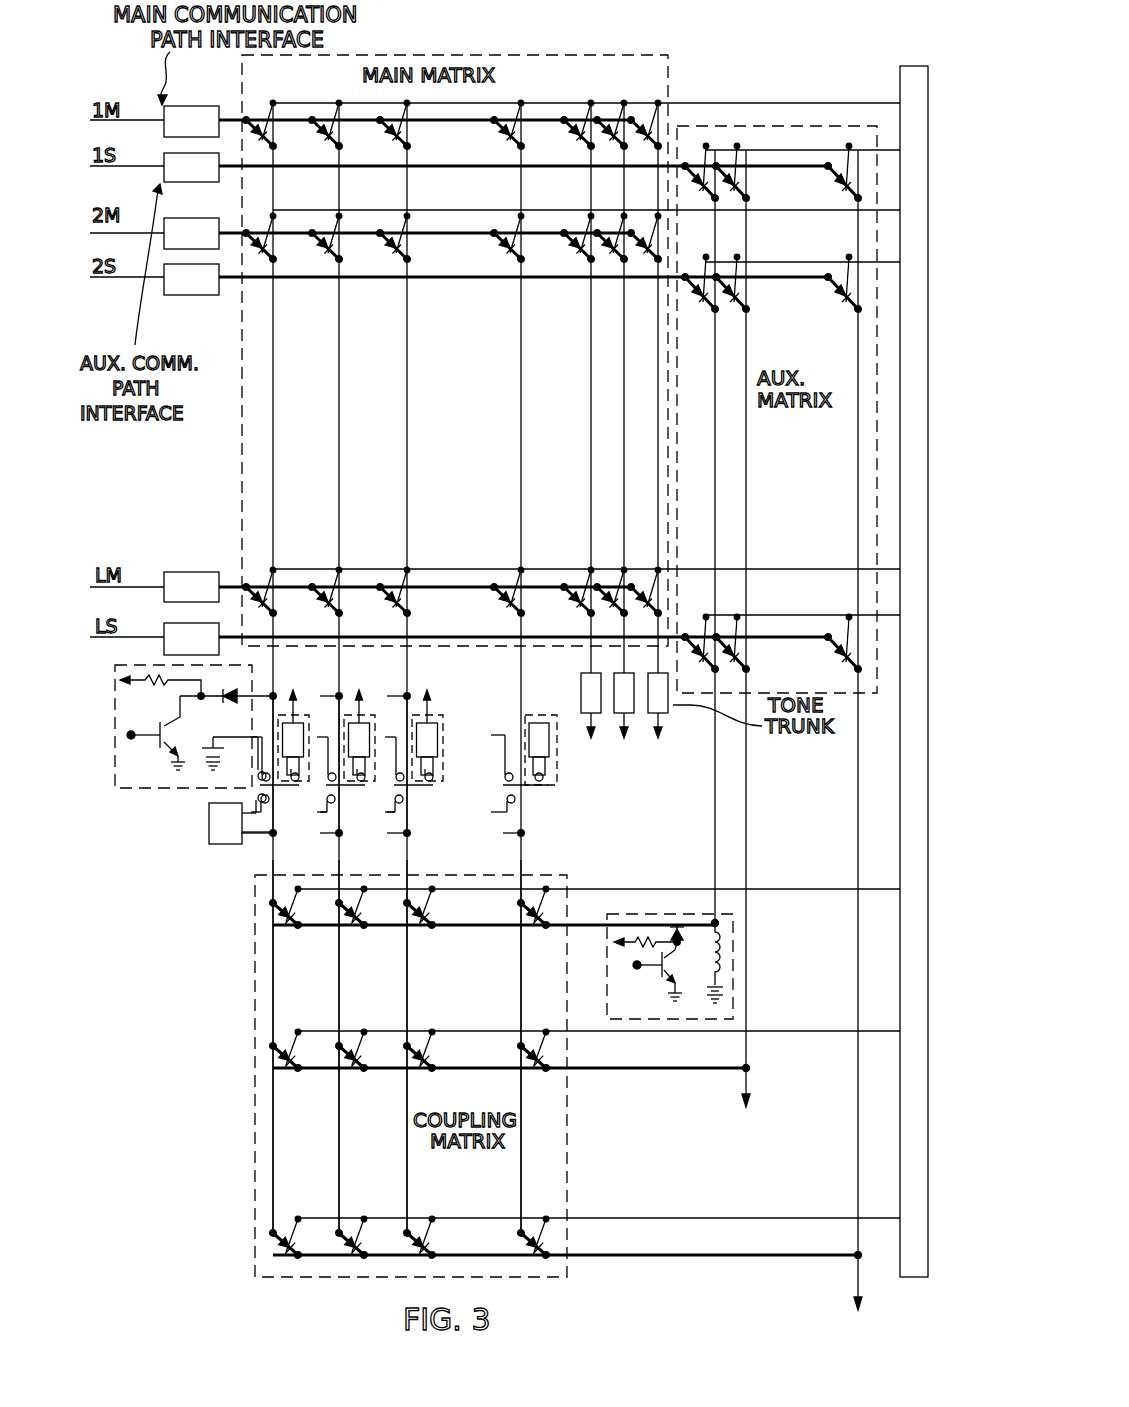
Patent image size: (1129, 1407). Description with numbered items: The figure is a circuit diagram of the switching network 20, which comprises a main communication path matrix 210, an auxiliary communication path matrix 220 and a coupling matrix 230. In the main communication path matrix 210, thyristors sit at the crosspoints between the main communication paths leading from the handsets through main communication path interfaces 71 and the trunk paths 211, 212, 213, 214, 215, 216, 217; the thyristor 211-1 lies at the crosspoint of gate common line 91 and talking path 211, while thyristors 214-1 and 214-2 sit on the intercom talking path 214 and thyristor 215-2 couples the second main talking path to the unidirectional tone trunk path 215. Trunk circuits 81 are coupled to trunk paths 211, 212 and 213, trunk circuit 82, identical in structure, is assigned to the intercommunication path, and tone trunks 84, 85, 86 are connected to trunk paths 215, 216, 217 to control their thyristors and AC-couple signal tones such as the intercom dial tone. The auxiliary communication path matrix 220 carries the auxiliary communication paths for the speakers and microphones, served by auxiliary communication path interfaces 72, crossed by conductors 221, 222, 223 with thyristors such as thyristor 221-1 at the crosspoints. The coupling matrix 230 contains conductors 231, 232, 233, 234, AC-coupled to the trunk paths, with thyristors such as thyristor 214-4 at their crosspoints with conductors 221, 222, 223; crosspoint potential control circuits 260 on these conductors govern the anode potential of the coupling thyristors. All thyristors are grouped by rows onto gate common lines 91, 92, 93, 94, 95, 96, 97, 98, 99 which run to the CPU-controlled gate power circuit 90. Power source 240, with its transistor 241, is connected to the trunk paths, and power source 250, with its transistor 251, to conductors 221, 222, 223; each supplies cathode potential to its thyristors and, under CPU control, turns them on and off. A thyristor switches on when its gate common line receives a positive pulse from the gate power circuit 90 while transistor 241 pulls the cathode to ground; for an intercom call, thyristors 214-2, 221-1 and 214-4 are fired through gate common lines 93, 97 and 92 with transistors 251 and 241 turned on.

The switching network 20 is at (252, 1176).
The main communication path interface 71 is at (180, 106).
The auxiliary communication path interface 72 is at (164, 178).
The trunk circuit 81 is at (303, 720).
The trunk circuit 82 is at (544, 715).
The tone trunk 84 is at (587, 713).
The tone trunk 85 is at (621, 713).
The tone trunk 86 is at (666, 713).
The gate power circuit 90 is at (905, 1282).
The gate common line 91 is at (685, 100).
The gate common line 92 is at (806, 148).
The gate common line 93 is at (775, 210).
The gate common line 94 is at (775, 262).
The gate common line 95 is at (785, 569).
The gate common line 96 is at (766, 615).
The gate common line 97 is at (783, 888).
The gate common line 98 is at (785, 1031).
The gate common line 99 is at (787, 1218).
The main communication path matrix 210 is at (485, 55).
The trunk path 211 is at (273, 363).
The thyristor 211-1 is at (258, 118).
The trunk path 212 is at (339, 370).
The trunk path 213 is at (407, 378).
The trunk path 214 is at (521, 366).
The thyristor 214-1 is at (506, 130).
The thyristor 214-2 is at (506, 240).
The thyristor 214-4 is at (534, 902).
The tone trunk path 215 is at (591, 428).
The thyristor 215-2 is at (580, 250).
The tone trunk path 216 is at (624, 448).
The tone trunk path 217 is at (658, 504).
The auxiliary communication path matrix 220 is at (750, 125).
The conductor 221 is at (715, 448).
The thyristor 221-1 is at (703, 174).
The conductor 222 is at (746, 516).
The conductor 223 is at (858, 442).
The coupling matrix 230 is at (255, 1110).
The conductor 231 is at (275, 998).
The conductor 232 is at (339, 1001).
The conductor 233 is at (407, 1001).
The conductor 234 is at (521, 1008).
The power source 240 is at (140, 793).
The transistor 241 is at (145, 740).
The power source 250 is at (633, 914).
The transistor 251 is at (642, 970).
The crosspoint potential control circuit 260 is at (216, 853).